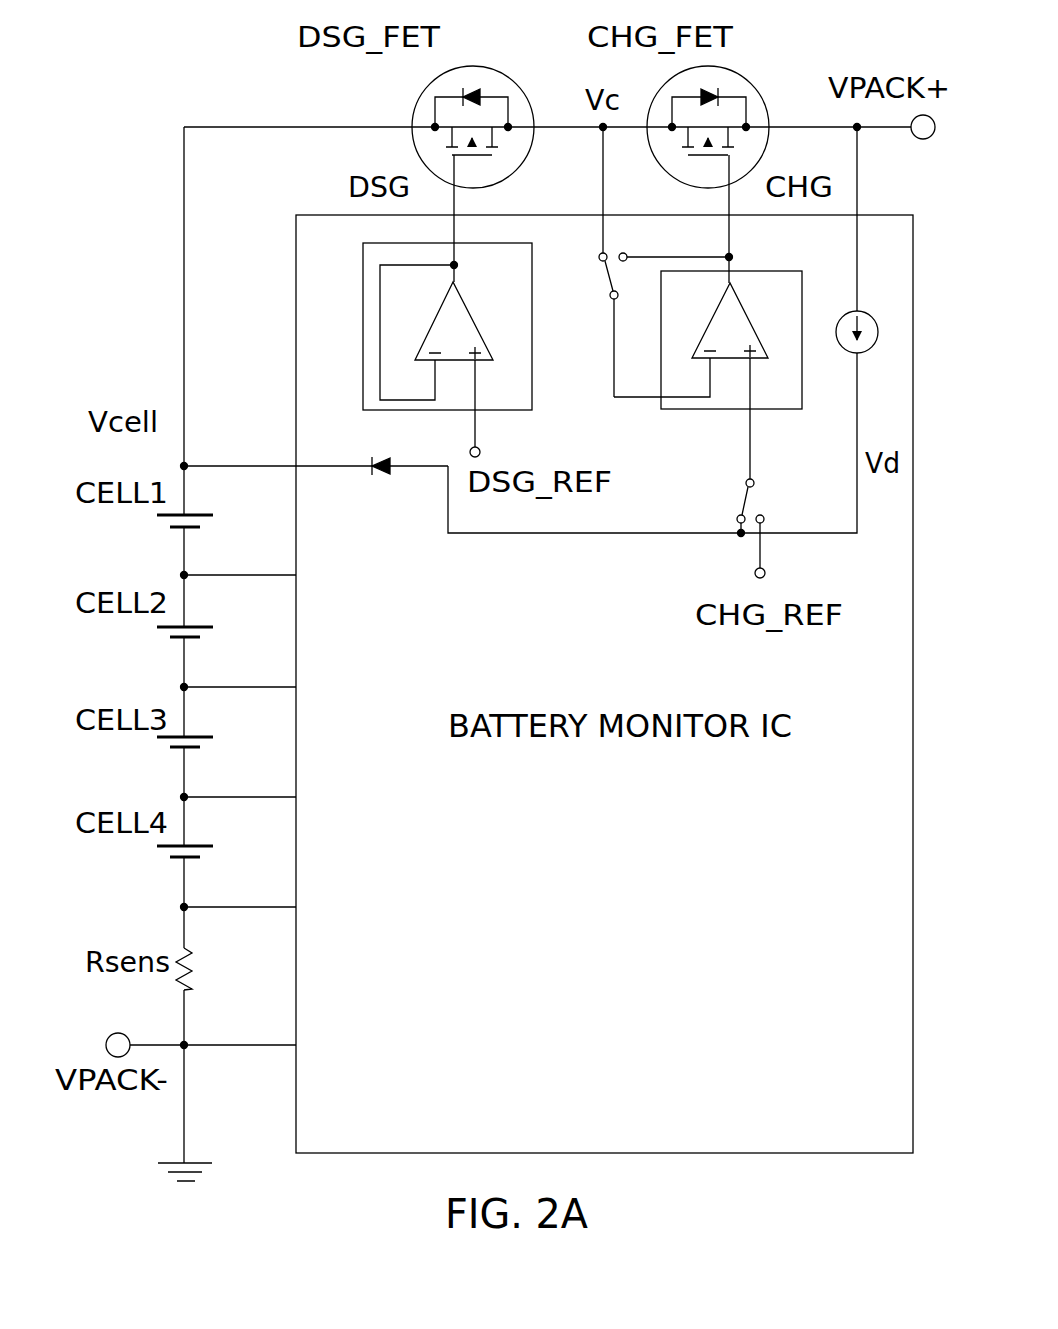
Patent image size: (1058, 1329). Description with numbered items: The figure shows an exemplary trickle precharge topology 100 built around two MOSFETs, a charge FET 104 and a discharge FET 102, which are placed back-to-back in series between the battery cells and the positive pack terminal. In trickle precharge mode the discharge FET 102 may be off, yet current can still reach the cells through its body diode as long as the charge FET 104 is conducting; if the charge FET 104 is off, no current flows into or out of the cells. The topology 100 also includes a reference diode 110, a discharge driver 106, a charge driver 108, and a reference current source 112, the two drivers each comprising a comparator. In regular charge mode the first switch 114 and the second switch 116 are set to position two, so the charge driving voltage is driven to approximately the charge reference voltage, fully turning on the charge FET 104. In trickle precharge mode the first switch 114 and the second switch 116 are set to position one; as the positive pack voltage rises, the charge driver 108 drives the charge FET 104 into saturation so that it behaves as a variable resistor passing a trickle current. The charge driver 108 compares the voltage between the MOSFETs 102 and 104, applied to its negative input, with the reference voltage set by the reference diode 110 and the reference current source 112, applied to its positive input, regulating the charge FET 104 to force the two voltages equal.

The trickle precharge topology 100 is at (184, 91).
The discharge FET 102 is at (451, 69).
The charge FET 104 is at (746, 75).
The discharge driver 106 is at (532, 376).
The charge driver 108 is at (705, 410).
The reference diode D1 110 is at (392, 472).
The reference current source Iref 112 is at (867, 352).
The switch K1 114 is at (586, 256).
The switch K2 116 is at (748, 543).